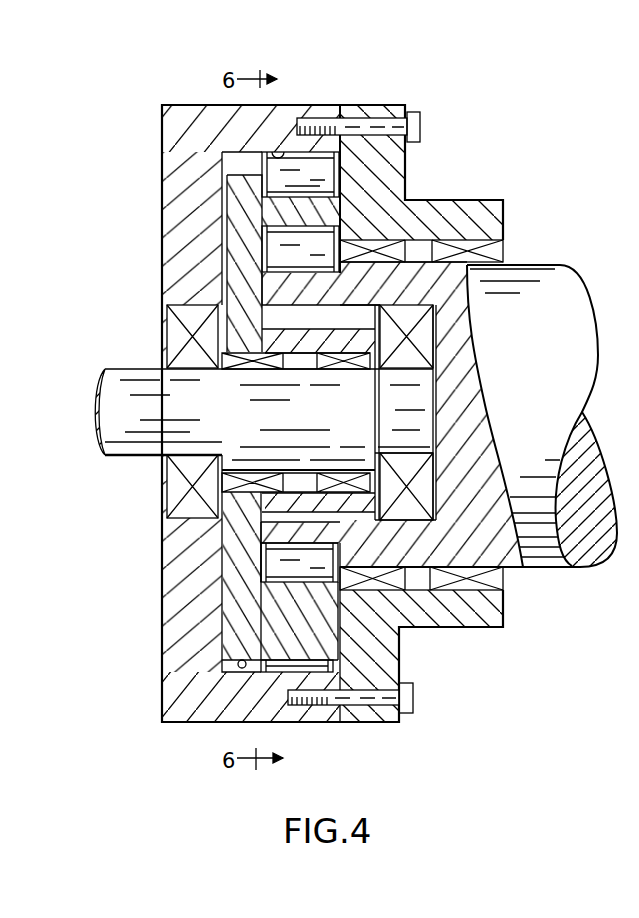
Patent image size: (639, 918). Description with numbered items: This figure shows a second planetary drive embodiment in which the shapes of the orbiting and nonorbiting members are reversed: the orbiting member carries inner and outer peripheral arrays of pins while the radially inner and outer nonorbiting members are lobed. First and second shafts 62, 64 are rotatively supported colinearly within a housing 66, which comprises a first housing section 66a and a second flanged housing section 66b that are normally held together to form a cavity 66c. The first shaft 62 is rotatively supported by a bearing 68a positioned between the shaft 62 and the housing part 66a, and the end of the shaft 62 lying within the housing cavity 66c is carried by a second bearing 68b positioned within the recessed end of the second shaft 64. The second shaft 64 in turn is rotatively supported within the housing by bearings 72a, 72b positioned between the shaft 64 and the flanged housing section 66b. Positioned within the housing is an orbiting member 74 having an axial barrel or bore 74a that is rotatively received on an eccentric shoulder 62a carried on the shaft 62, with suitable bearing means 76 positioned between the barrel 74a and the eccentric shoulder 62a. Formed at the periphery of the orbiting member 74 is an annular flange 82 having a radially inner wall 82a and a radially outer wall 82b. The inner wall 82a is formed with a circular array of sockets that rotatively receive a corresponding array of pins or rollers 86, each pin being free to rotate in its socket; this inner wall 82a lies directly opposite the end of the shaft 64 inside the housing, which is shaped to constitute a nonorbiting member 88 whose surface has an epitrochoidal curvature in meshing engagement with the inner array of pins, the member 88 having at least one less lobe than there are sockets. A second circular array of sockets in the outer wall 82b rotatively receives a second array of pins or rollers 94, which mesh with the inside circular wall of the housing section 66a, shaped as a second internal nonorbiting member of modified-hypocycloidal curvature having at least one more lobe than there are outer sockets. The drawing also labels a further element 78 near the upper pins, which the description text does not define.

The first shaft 62 is at (110, 401).
The eccentric shoulder 62a is at (355, 417).
The second shaft 64 is at (545, 277).
The housing 66 is at (172, 295).
The first housing section 66a is at (172, 106).
The second flanged housing section 66b is at (375, 106).
The cavity 66c is at (230, 162).
The bearing 68a is at (175, 483).
The second bearing 68b is at (422, 478).
The bearing 72a is at (405, 630).
The bearing 72b is at (490, 582).
The orbiting member 74 is at (275, 281).
The axial barrel 74a is at (286, 331).
The bearing means 76 is at (320, 362).
The roller 78 is at (283, 157).
The annular flange 82 is at (288, 213).
The radially inner wall 82a is at (302, 578).
The radially outer wall 82b is at (242, 658).
The pins or rollers 86 is at (280, 250).
The nonorbiting member 88 is at (383, 296).
The pins or rollers 94 is at (340, 166).